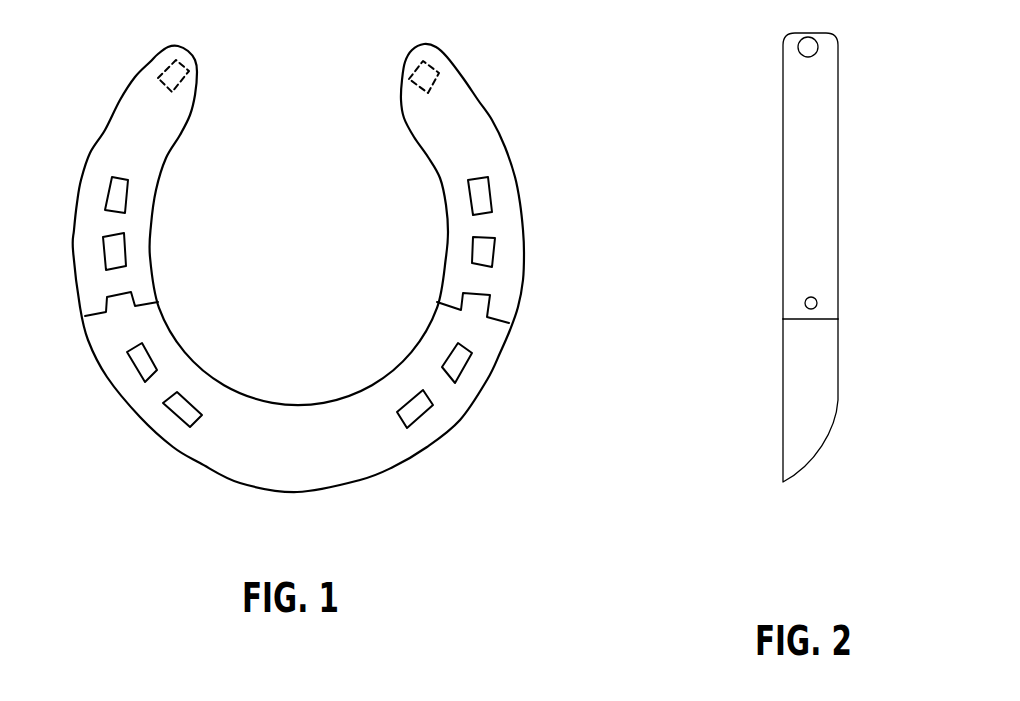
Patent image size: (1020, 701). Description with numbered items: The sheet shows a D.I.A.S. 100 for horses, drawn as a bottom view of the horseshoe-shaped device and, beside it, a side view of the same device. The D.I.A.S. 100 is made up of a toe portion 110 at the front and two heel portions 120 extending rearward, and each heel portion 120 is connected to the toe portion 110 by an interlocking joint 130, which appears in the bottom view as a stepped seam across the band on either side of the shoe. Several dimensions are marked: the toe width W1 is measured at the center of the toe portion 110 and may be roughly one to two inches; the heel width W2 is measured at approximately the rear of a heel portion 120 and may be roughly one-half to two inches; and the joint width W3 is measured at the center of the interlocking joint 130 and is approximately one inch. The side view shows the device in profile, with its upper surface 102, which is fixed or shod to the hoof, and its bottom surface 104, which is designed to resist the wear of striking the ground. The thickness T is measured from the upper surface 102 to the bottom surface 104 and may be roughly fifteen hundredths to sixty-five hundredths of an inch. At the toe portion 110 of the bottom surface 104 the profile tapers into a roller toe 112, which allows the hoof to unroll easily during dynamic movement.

In FIG. 1, the D.I.A.S. 100 is at (575, 44).
In FIG. 2, the D.I.A.S. 100 is at (727, 49).
In FIG. 1, the toe portion 110 is at (308, 458).
In FIG. 2, the toe portion 110 is at (813, 370).
In FIG. 1, the heel portion 120 is at (493, 218).
In FIG. 2, the heel portion 120 is at (805, 210).
In FIG. 1, the interlocking joint 130 is at (490, 320).
In FIG. 2, the interlocking joint 130 is at (813, 322).
In FIG. 2, the upper surface 102 is at (778, 405).
In FIG. 2, the bottom surface 104 is at (843, 407).
In FIG. 2, the roller toe 112 is at (813, 458).
In FIG. 2, the thickness T is at (748, 94).
In FIG. 1, the toe width W1 is at (297, 545).
In FIG. 1, the heel width W2 is at (88, 66).
In FIG. 1, the joint width W3 is at (8, 344).